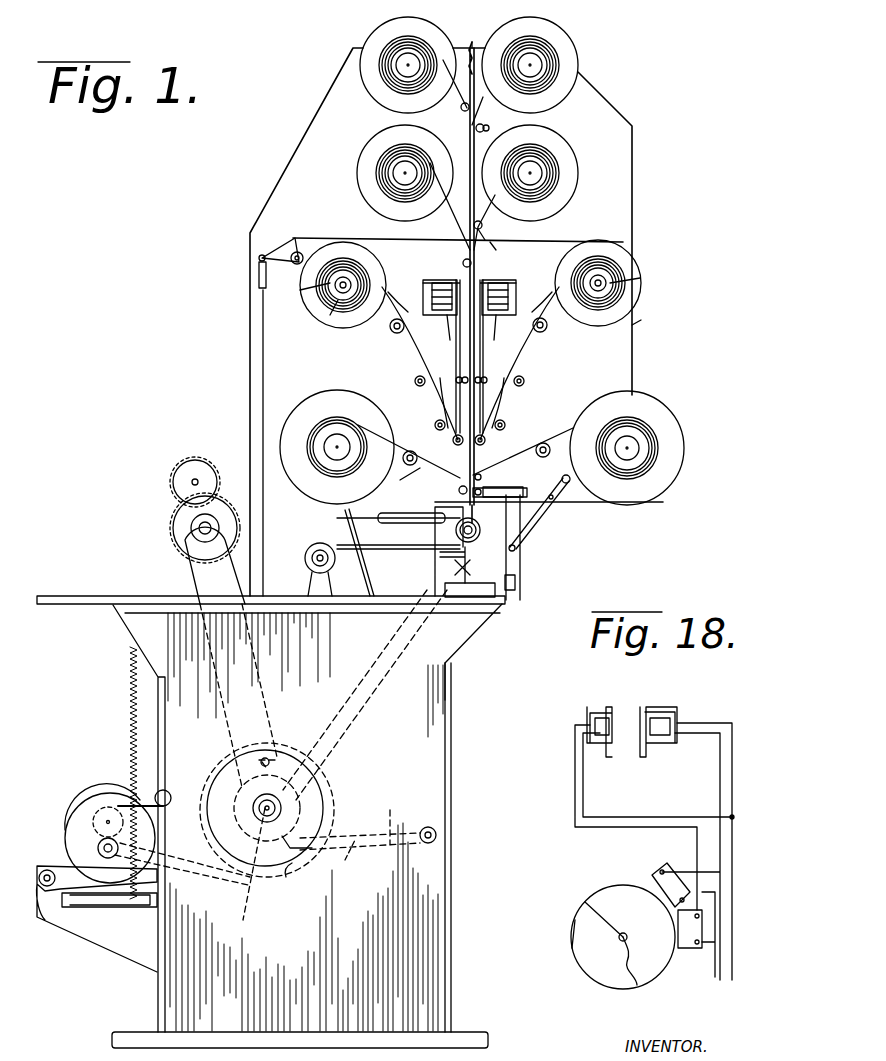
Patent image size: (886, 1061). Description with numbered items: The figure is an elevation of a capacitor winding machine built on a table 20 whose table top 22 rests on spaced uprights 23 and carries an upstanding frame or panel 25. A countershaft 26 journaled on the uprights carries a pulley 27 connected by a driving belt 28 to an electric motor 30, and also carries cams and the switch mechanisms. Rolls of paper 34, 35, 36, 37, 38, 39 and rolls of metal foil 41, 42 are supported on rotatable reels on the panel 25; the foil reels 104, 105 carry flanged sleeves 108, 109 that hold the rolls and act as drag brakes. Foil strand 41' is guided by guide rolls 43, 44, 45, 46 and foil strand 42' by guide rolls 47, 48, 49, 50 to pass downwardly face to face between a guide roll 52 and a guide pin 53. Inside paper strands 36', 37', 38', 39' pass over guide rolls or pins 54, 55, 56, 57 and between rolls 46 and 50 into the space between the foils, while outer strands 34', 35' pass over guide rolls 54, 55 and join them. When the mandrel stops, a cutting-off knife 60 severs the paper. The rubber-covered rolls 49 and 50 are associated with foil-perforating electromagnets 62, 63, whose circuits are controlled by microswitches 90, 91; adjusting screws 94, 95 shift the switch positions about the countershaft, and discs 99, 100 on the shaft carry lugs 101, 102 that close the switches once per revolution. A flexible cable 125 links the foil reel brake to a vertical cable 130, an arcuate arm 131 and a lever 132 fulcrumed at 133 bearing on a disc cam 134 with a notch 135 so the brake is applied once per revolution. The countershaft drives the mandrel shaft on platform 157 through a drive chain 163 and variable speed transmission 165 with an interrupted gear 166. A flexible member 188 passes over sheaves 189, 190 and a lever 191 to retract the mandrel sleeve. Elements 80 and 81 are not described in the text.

In FIG. 1, the table 20 is at (462, 783).
In FIG. 1, the table top 22 is at (55, 596).
In FIG. 1, the upright 23 is at (420, 900).
In FIG. 1, the frame or panel 25 is at (312, 183).
In FIG. 1, the countershaft 26 is at (266, 812).
In FIG. 1, the pulley 27 is at (290, 880).
In FIG. 1, the driving belt 28 is at (180, 860).
In FIG. 1, the electric motor 30 is at (65, 830).
In FIG. 1, the roll of paper 34 is at (336, 437).
In FIG. 1, the outer strand of paper 34' is at (409, 445).
In FIG. 1, the roll of paper 35 is at (632, 432).
In FIG. 1, the outer strand of paper 35' is at (523, 442).
In FIG. 1, the roll of paper 36 is at (385, 173).
In FIG. 1, the inside strand of paper 36' is at (454, 226).
In FIG. 1, the roll of paper 37 is at (548, 173).
In FIG. 1, the inside strand of paper 37' is at (532, 228).
In FIG. 1, the roll of paper 38 is at (387, 63).
In FIG. 1, the inside strand of paper 38' is at (449, 116).
In FIG. 1, the roll of paper 39 is at (554, 63).
In FIG. 1, the inside strand of paper 39' is at (475, 31).
In FIG. 1, the roll of metal foil 41 is at (329, 289).
In FIG. 1, the strand of metal foil 41' is at (374, 331).
In FIG. 1, the roll of metal foil 42 is at (630, 283).
In FIG. 1, the strand of metal foil 42' is at (572, 332).
In FIG. 1, the guide roll 43 is at (392, 330).
In FIG. 1, the guide roll 44 is at (414, 381).
In FIG. 1, the guide roll 45 is at (440, 420).
In FIG. 1, the guide roll 46 is at (416, 478).
In FIG. 1, the guide roll 47 is at (547, 330).
In FIG. 1, the guide roll 48 is at (525, 381).
In FIG. 1, the guide roll 49 is at (500, 420).
In FIG. 1, the guide roll 50 is at (486, 441).
In FIG. 1, the guide roll 52 is at (459, 490).
In FIG. 1, the guide pin 53 is at (484, 484).
In FIG. 1, the guide roll 54 is at (463, 262).
In FIG. 1, the guide roll 55 is at (492, 242).
In FIG. 1, the guide roll or pin 56 is at (477, 130).
In FIG. 1, the guide roll or pin 57 is at (489, 127).
In FIG. 1, the cutting-off knife 60 is at (455, 524).
In FIG. 1, the electromagnet 62 is at (446, 320).
In FIG. 18, the electromagnet 62 is at (600, 725).
In FIG. 1, the electromagnet 63 is at (496, 320).
In FIG. 18, the electromagnet 63 is at (658, 725).
In FIG. 1, the guide rail 80 is at (440, 378).
In FIG. 1, the guide rail 81 is at (504, 378).
In FIG. 18, the microswitch 90 is at (692, 950).
In FIG. 18, the microswitch 91 is at (658, 870).
In FIG. 1, the adjusting screw 94 is at (350, 700).
In FIG. 1, the adjusting screw 95 is at (384, 698).
In FIG. 18, the disc 99 is at (653, 971).
In FIG. 18, the disc 100 is at (582, 906).
In FIG. 18, the radially projecting lug 101 is at (600, 880).
In FIG. 18, the radially projecting lug 102 is at (576, 950).
In FIG. 1, the reel 104 is at (332, 315).
In FIG. 1, the reel 105 is at (641, 320).
In FIG. 1, the flanged sleeve 108 is at (300, 290).
In FIG. 1, the flanged sleeve 109 is at (640, 278).
In FIG. 1, the flexible cable 125 is at (312, 240).
In FIG. 1, the flexible cable 130 is at (262, 420).
In FIG. 1, the arcuately curved arm 131 is at (328, 792).
In FIG. 1, the lever 132 is at (350, 862).
In FIG. 1, the fulcrum 133 is at (438, 835).
In FIG. 1, the disc cam 134 is at (243, 922).
In FIG. 1, the peripheral notch 135 is at (310, 770).
In FIG. 1, the platform 157 is at (422, 600).
In FIG. 1, the drive chain 163 is at (212, 643).
In FIG. 1, the variable speed transmission 165 is at (170, 507).
In FIG. 1, the interrupted gear 166 is at (175, 532).
In FIG. 1, the flexible member 188 is at (343, 522).
In FIG. 1, the sheave 189 is at (440, 556).
In FIG. 1, the sheave 190 is at (307, 552).
In FIG. 1, the lever 191 is at (65, 868).